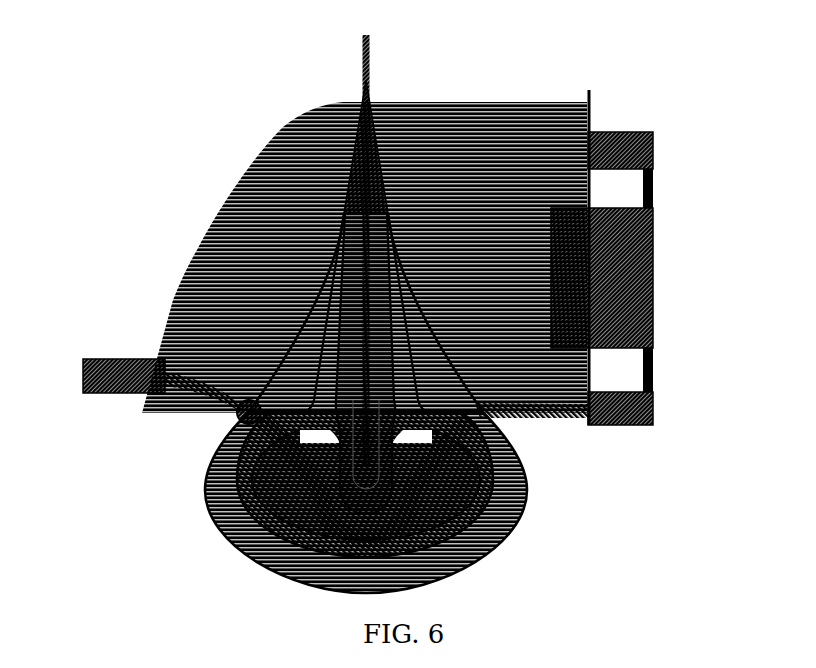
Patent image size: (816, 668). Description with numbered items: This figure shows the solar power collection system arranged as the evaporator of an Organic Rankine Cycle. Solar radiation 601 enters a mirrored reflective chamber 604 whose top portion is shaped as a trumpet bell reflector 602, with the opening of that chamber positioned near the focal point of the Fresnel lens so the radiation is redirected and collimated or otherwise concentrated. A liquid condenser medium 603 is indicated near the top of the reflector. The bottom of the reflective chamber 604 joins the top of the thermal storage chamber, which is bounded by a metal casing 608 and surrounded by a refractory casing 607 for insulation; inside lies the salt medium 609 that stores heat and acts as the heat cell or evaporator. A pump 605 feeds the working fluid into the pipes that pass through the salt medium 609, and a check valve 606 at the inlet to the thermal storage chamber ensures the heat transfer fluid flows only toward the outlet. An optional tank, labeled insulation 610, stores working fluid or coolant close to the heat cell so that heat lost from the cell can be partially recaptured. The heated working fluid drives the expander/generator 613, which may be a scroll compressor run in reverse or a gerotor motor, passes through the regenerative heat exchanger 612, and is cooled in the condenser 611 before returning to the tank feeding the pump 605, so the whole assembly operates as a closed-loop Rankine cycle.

The solar radiation 601 is at (360, 120).
The trumpet bell reflector 602 is at (352, 175).
The liquid condenser medium 603 is at (322, 212).
The reflective chamber 604 is at (337, 262).
The pump 605 is at (124, 376).
The check valve 606 is at (236, 411).
The refractory casing 607 is at (240, 447).
The metal casing 608 is at (248, 475).
The salt medium 609 is at (279, 502).
The insulation 610 is at (425, 346).
The condenser 611 is at (620, 257).
The regenerative heat exchanger 612 is at (620, 300).
The expander/generator 613 is at (627, 427).